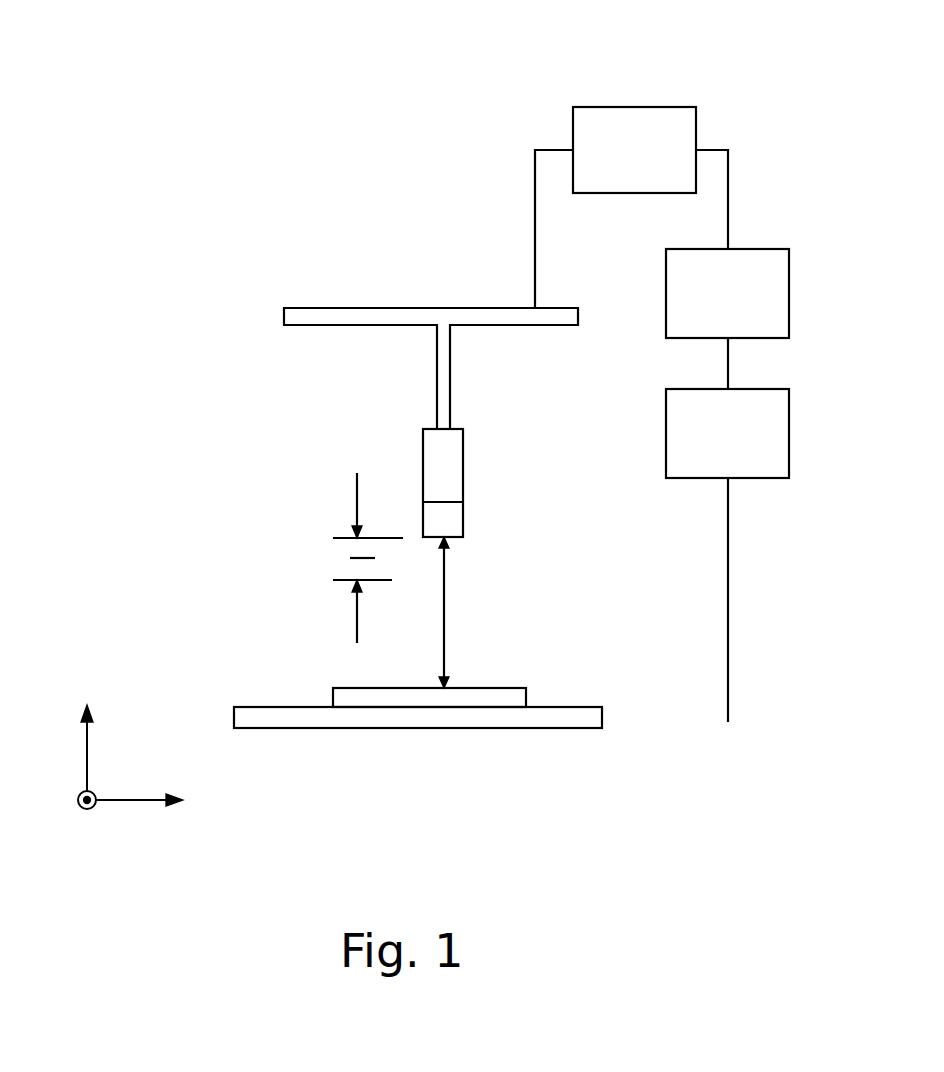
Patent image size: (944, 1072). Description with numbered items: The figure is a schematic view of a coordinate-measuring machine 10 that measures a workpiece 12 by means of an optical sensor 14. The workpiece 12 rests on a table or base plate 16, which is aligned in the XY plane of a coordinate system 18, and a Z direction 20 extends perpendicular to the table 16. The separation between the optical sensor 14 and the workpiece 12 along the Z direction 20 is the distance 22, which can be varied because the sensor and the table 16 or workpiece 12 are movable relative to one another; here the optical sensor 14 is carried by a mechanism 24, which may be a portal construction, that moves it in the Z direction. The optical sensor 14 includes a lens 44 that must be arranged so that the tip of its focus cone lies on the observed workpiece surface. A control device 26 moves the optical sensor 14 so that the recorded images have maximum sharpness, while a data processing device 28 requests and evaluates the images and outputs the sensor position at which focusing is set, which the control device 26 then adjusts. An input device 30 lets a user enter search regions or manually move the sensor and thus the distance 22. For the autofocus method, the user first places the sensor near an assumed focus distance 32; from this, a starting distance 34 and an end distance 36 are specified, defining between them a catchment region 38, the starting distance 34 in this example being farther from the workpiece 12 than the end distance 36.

The coordinate-measuring machine 10 is at (226, 222).
The workpiece 12 is at (494, 696).
The optical sensor 14 is at (455, 455).
The table or base plate 16 is at (578, 716).
The coordinate system 18 is at (83, 816).
The Z direction 20 is at (88, 760).
The distance 22 is at (450, 608).
The mechanism 24 is at (329, 316).
The control device 26 is at (635, 107).
The data processing device 28 is at (789, 293).
The input device 30 is at (789, 432).
The assumed focus distance 32 is at (355, 554).
The starting distance 34 is at (343, 535).
The end distance 36 is at (340, 582).
The catchment region 38 is at (357, 492).
The lens 44 is at (453, 515).